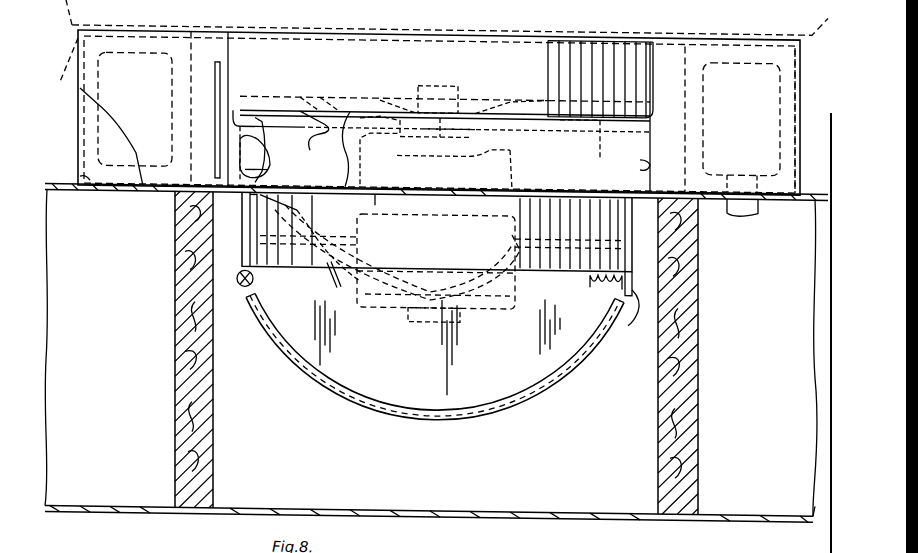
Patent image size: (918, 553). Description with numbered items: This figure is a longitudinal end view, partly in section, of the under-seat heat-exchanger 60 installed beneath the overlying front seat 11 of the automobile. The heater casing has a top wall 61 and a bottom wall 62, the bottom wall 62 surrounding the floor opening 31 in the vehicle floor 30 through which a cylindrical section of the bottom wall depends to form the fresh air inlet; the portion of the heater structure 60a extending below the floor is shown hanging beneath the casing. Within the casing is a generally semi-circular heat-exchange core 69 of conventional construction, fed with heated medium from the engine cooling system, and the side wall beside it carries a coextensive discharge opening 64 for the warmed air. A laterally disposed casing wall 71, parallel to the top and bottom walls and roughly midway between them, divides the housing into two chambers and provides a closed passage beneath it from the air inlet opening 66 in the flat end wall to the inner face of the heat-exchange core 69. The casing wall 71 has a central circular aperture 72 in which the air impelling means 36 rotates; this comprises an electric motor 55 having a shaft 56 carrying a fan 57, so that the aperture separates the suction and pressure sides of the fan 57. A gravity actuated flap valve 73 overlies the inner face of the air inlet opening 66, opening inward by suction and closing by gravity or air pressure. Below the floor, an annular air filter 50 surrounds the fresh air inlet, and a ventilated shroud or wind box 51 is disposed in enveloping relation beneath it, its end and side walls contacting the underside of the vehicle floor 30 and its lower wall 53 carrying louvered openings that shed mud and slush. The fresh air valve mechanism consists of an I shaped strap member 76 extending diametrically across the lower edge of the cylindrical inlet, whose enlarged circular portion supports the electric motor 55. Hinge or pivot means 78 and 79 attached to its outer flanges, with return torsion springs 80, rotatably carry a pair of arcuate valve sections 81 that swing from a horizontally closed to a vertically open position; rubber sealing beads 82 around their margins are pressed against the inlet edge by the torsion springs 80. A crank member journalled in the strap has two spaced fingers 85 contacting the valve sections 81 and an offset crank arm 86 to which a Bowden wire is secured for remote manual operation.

The front seat 11 is at (68, 14).
The vehicle floor 30 is at (62, 194).
The floor opening 31 is at (205, 205).
The air impelling means 36 is at (366, 205).
The air filter 50 is at (175, 338).
The shroud or wind box 51 is at (118, 499).
The lower wall 53 is at (72, 505).
The electric motor 55 is at (514, 158).
The shaft 56 is at (475, 153).
The fan 57 is at (330, 91).
The heat-exchanger 60 is at (694, 24).
The lower housing 60a is at (633, 220).
The top wall 61 is at (660, 29).
The bottom wall 62 is at (86, 174).
The discharge opening 64 is at (80, 100).
The air inlet opening 66 is at (645, 158).
The heat-exchange core 69 is at (90, 132).
The casing wall 71 is at (593, 142).
The central circular aperture 72 is at (238, 102).
The flap valve 73 is at (285, 142).
The I shaped strap member 76 is at (518, 289).
The hinge or pivot means 78 is at (254, 276).
The hinge or pivot means 79 is at (637, 314).
The return torsion spring 80 is at (596, 283).
The arcuate valve section 81 is at (498, 362).
The rubber sealing bead 82 is at (418, 409).
The finger 85 is at (330, 285).
The offset crank arm 86 is at (225, 60).